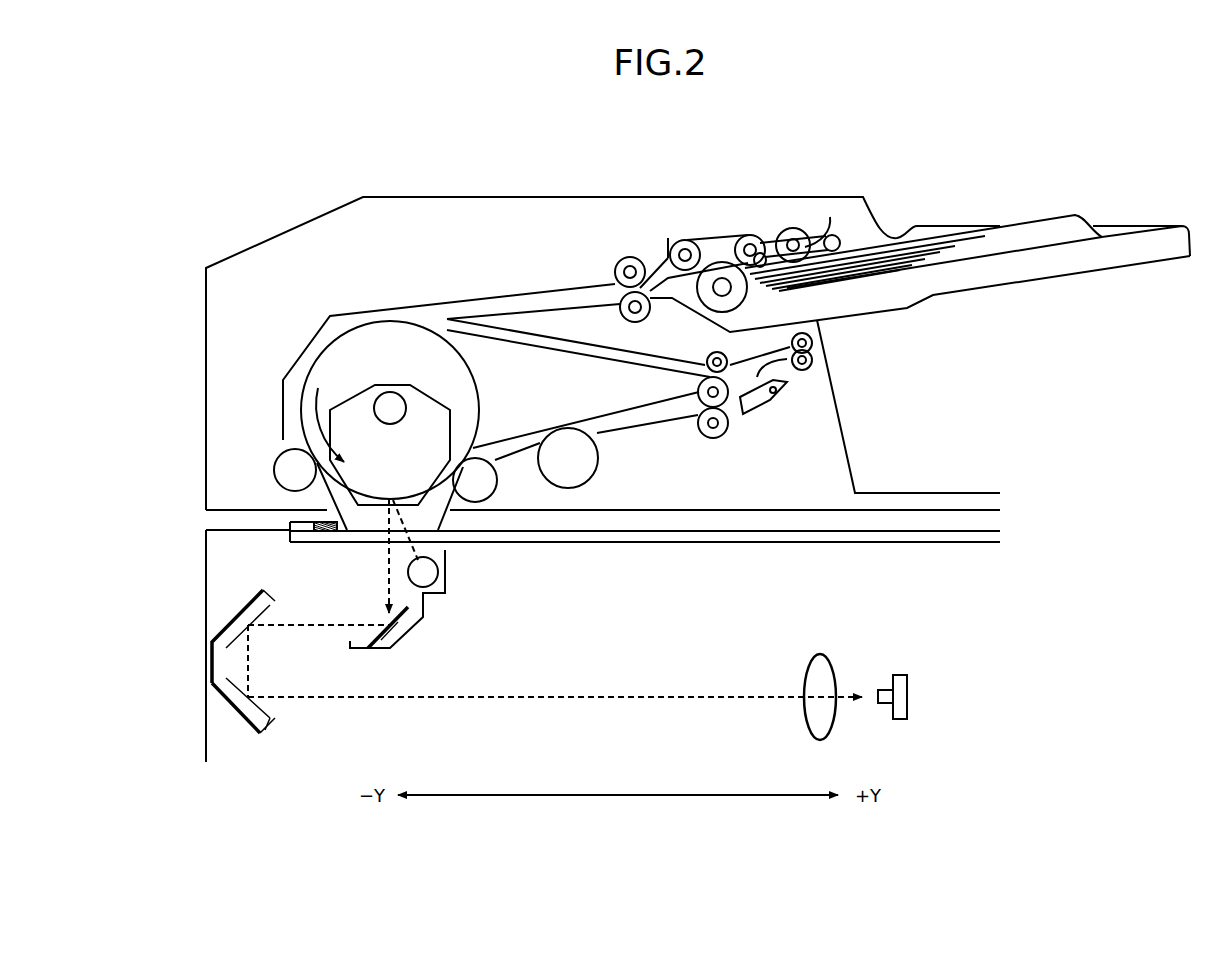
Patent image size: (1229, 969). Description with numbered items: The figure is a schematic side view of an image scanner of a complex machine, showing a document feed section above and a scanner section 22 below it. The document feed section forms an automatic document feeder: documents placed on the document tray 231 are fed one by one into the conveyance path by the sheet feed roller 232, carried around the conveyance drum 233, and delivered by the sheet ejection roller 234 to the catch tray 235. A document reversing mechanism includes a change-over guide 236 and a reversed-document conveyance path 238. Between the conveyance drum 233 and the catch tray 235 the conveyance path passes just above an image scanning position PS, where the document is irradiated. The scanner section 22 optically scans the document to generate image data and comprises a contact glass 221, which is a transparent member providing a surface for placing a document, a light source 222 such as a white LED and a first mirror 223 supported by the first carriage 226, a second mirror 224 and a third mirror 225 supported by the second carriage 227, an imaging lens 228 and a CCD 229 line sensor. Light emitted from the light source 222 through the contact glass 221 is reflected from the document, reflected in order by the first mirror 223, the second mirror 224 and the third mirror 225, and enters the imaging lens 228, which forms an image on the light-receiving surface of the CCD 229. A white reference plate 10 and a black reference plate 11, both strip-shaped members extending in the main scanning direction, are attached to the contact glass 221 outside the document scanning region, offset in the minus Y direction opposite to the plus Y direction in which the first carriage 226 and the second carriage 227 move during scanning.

The scanner section 22 is at (200, 527).
The white reference plate 10 is at (303, 525).
The black reference plate 11 is at (320, 545).
The image scanning position PS is at (384, 551).
The contact glass 221 is at (953, 544).
The light source 222 is at (447, 570).
The first mirror 223 is at (404, 630).
The second mirror 224 is at (238, 633).
The third mirror 225 is at (232, 690).
The first carriage 226 is at (438, 574).
The second carriage 227 is at (270, 733).
The imaging lens 228 is at (828, 652).
The CCD 229 is at (907, 697).
The document tray 231 is at (1138, 226).
The sheet feed roller 232 is at (793, 228).
The conveyance drum 233 is at (323, 362).
The sheet ejection roller 234 is at (730, 427).
The catch tray 235 is at (967, 493).
The change-over guide 236 is at (777, 403).
The reversed-document conveyance path 238 is at (497, 328).